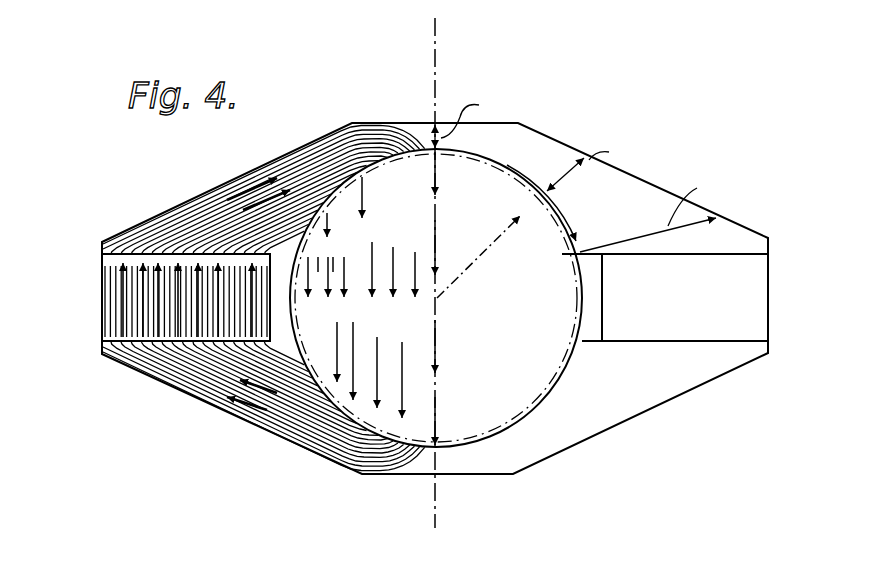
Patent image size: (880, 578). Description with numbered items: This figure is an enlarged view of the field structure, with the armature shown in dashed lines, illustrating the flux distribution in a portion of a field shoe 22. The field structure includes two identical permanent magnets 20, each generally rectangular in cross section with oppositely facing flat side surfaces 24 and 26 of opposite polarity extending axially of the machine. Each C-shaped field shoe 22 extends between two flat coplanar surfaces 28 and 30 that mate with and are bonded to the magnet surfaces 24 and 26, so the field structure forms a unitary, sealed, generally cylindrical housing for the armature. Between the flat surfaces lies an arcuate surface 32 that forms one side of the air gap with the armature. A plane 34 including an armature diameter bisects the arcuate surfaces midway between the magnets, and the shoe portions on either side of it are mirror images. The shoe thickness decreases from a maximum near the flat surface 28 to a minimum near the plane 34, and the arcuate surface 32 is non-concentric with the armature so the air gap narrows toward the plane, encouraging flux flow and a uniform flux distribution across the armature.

The permanent magnet 20 is at (103, 304).
The field shoe 22 is at (200, 389).
The flat side surface 24 is at (140, 253).
The flat side surface 26 is at (128, 347).
The flat coplanar surface 28 is at (113, 257).
The flat coplanar surface 30 is at (111, 343).
The arcuate surface 32 is at (510, 170).
The plane 34 is at (435, 62).